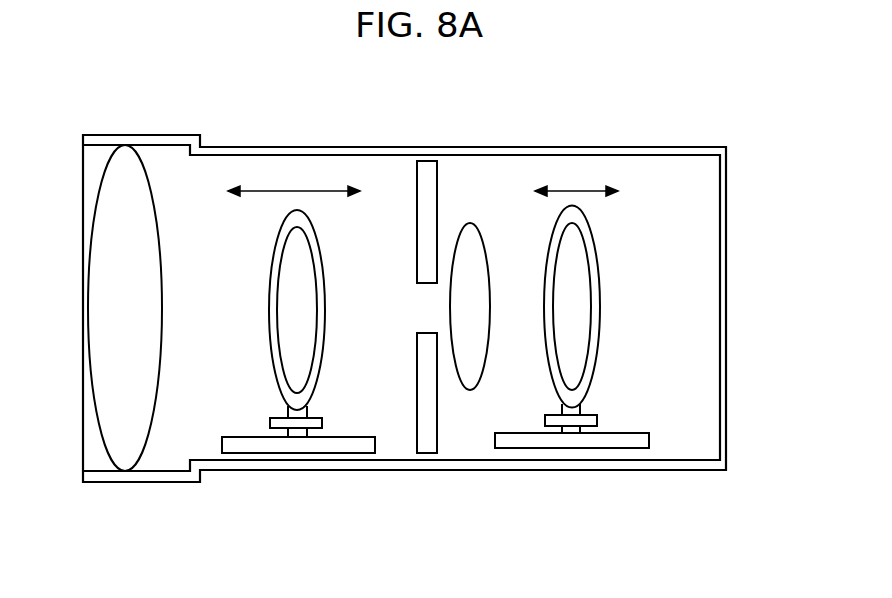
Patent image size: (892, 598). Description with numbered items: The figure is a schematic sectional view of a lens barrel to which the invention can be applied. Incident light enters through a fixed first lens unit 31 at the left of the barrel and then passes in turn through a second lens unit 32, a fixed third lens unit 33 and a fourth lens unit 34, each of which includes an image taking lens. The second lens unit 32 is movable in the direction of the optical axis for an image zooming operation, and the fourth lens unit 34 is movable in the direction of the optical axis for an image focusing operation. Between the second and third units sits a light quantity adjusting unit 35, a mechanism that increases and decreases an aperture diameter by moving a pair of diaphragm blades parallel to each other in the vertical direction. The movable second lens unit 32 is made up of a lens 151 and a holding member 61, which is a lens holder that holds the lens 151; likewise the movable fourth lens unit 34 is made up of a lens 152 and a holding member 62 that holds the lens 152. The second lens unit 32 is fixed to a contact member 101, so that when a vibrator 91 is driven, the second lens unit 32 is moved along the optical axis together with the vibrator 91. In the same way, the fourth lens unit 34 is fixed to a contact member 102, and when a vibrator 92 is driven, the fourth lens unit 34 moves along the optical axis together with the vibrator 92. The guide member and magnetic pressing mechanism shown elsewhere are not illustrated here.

The first lens unit 31 is at (140, 152).
The second lens unit 32 is at (247, 310).
The third lens unit 33 is at (485, 233).
The fourth lens unit 34 is at (629, 307).
The light quantity adjusting unit 35 is at (424, 160).
The holding member 61 is at (273, 242).
The lens 151 is at (205, 233).
The holding member 62 is at (593, 327).
The lens 152 is at (570, 253).
The vibrator 91 is at (315, 417).
The vibrator 92 is at (592, 413).
The contact member 101 is at (338, 447).
The contact member 102 is at (617, 443).